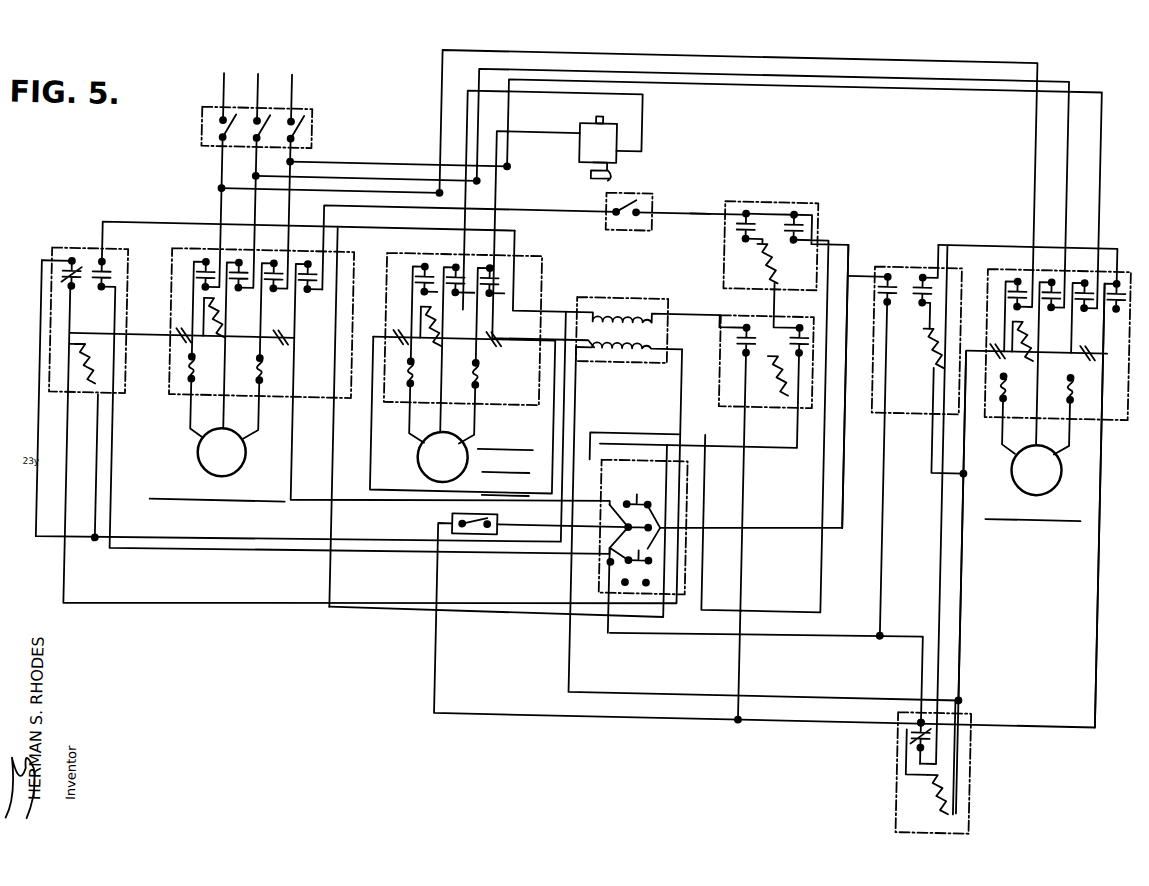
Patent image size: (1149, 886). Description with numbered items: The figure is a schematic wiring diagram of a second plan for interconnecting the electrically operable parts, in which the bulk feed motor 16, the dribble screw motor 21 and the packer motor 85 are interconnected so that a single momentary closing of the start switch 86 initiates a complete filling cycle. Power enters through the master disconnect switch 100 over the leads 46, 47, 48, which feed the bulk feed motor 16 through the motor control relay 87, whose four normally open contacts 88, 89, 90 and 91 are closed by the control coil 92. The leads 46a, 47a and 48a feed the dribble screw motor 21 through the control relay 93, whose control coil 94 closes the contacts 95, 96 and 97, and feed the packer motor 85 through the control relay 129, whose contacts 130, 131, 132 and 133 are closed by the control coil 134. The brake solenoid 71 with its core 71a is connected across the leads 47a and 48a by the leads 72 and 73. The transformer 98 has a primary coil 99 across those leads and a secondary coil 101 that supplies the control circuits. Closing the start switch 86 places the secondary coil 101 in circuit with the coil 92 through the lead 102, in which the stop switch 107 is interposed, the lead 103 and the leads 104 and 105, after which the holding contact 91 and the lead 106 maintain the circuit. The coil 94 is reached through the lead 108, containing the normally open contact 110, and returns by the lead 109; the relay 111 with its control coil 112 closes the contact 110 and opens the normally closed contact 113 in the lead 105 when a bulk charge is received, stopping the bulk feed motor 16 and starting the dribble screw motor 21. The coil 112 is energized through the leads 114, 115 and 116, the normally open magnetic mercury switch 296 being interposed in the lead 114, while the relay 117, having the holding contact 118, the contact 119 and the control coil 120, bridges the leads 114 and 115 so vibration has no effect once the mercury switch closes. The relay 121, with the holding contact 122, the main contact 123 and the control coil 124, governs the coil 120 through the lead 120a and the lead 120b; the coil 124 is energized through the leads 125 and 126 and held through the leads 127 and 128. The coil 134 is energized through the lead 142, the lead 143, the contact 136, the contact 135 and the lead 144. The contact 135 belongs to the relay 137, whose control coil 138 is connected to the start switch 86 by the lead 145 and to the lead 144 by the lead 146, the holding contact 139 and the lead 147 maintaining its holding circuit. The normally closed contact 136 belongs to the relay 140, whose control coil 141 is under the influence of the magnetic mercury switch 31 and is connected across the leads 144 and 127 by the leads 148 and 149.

The master disconnect switch 100 is at (230, 180).
The power lead 46 is at (304, 183).
The power lead 47 is at (352, 166).
The power lead 48 is at (397, 156).
The power lead 46a is at (714, 178).
The power lead 47a is at (721, 187).
The power lead 48a is at (724, 192).
The solenoid 71 is at (582, 157).
The core 71a is at (629, 173).
The lead 72 is at (553, 202).
The lead 73 is at (545, 239).
The lead 114 is at (483, 250).
The switch 296 is at (677, 196).
The lead 120a is at (703, 198).
The relay 117 is at (771, 225).
The holding contact 118 is at (732, 226).
The contact 119 is at (800, 396).
The control coil 120 is at (766, 282).
The relay 121 is at (740, 336).
The holding contact 122 is at (714, 309).
The main contact 123 is at (748, 506).
The control coil 124 is at (704, 385).
The lead 115 is at (468, 405).
The transformer 98 is at (620, 312).
The primary transformer coil 99 is at (617, 279).
The secondary coil 101 is at (628, 369).
The lead 102 is at (635, 430).
The lead 125 is at (721, 523).
The lead 126 is at (771, 464).
The lead 120b is at (782, 481).
The motor control relay 87 is at (235, 293).
The normally open contact 88 is at (186, 294).
The normally open contact 89 is at (232, 330).
The normally open contact 90 is at (268, 295).
The holding contact 91 is at (449, 370).
The control coil 92 is at (181, 367).
The bulk feed motor 16 is at (224, 464).
The lead 108 is at (304, 408).
The lead 104 is at (497, 547).
The lead 105 is at (301, 403).
The lead 106 is at (296, 518).
The lead 116 is at (124, 467).
The relay 111 is at (84, 287).
The normally closed contact 113 is at (54, 253).
The normally open contact 110 is at (351, 407).
The control coil 112 is at (112, 383).
The control relay 93 is at (482, 316).
The contact 95 is at (395, 312).
The contact 96 is at (432, 332).
The contact 97 is at (507, 298).
The control coil 94 is at (463, 376).
The dribble screw motor 21 is at (456, 461).
The lead 109 is at (444, 415).
The start switch 86 is at (643, 527).
The stop switch 107 is at (673, 575).
The lead 103 is at (567, 589).
The magnetic mercury switch 31 is at (441, 524).
The lead 127 is at (769, 503).
The lead 149 is at (764, 738).
The lead 128 is at (763, 595).
The lead 145 is at (773, 546).
The lead 142 is at (767, 676).
The lead 144 is at (791, 524).
The relay 137 is at (917, 313).
The holding contact 139 is at (869, 435).
The contact 135 is at (921, 281).
The control coil 138 is at (937, 393).
The lead 146 is at (927, 461).
The lead 147 is at (903, 560).
The lead 143 is at (994, 486).
The line 148 is at (985, 583).
The control relay 129 is at (1046, 301).
The contact 130 is at (998, 300).
The contact 131 is at (1045, 332).
The contact 132 is at (1079, 286).
The contact 133 is at (1109, 472).
The control coil 134 is at (1036, 388).
The packer motor 85 is at (1045, 483).
The relay 140 is at (893, 771).
The contact 136 is at (888, 741).
The control coil 141 is at (899, 756).